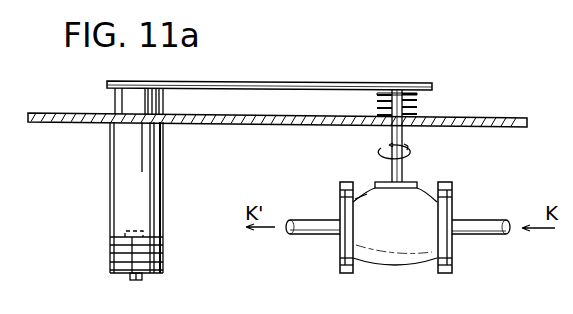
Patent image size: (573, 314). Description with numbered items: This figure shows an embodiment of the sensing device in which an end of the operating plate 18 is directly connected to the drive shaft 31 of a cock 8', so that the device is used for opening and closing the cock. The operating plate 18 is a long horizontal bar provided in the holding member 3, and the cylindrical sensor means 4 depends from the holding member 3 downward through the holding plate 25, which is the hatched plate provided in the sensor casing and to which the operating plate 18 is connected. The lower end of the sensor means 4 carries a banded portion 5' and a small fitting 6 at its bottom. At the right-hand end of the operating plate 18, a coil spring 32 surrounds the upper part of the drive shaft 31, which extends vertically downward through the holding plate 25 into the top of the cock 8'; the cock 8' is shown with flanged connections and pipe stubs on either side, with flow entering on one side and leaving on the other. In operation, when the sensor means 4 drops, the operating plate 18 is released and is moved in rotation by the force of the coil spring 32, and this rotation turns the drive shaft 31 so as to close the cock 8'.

The holding member 3 is at (113, 98).
The sensor means 4 is at (110, 188).
The banded piston section 5' is at (154, 252).
The nut 6 is at (140, 280).
The cock 8' is at (396, 243).
The operating plate 18 is at (319, 82).
The holding plate 25 is at (240, 123).
The drive shaft 31 is at (405, 133).
The coil spring 32 is at (410, 104).